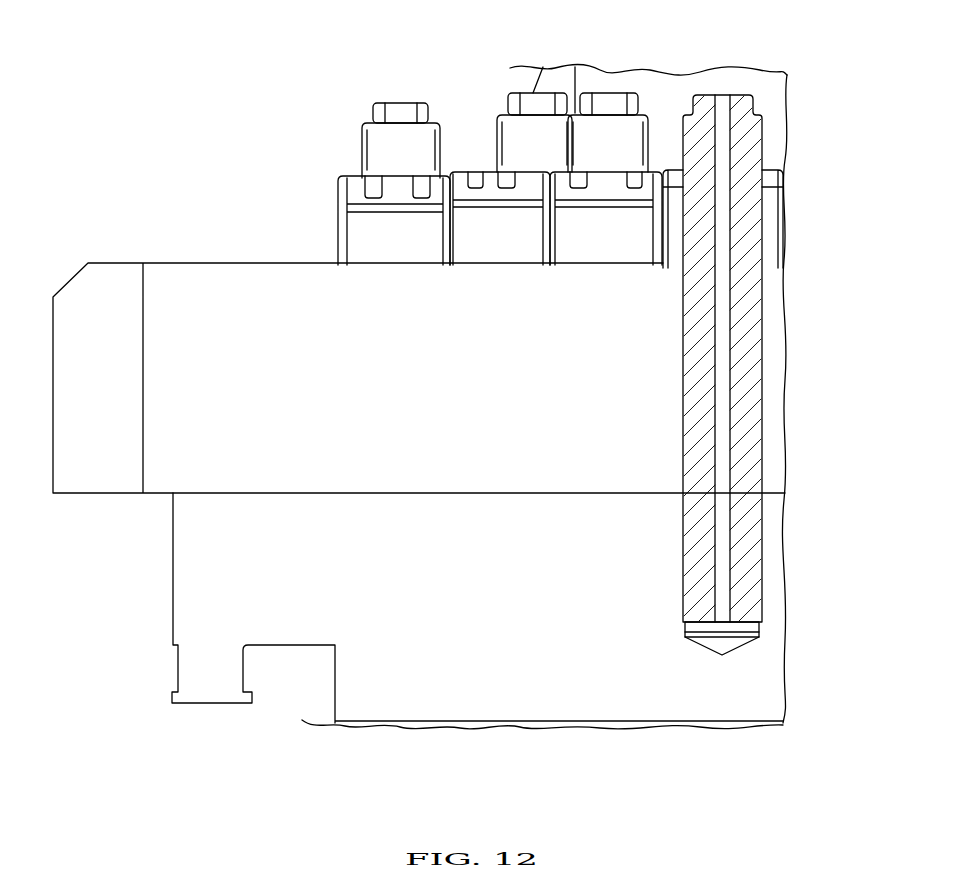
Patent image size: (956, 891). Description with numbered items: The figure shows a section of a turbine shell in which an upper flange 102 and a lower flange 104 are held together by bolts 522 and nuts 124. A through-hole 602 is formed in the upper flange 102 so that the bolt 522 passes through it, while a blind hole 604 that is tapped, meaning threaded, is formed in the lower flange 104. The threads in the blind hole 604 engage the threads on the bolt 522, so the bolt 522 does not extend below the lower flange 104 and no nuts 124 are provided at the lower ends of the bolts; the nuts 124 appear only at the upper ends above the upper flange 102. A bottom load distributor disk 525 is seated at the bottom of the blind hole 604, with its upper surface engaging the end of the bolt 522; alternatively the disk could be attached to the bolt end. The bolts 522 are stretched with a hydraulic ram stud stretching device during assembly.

The upper flange 102 is at (104, 296).
The lower flange 104 is at (193, 538).
The nut 124 is at (372, 246).
The bolt 522 is at (385, 150).
The through-hole 602 is at (683, 425).
The blind hole 604 is at (683, 600).
The bottom load distributor disk 525 is at (685, 627).